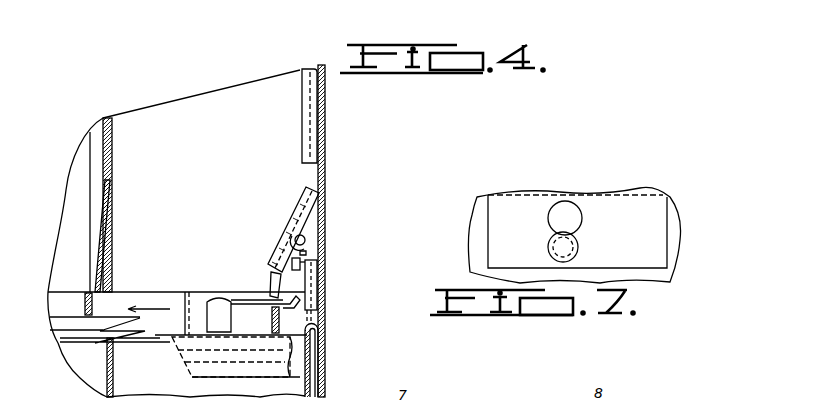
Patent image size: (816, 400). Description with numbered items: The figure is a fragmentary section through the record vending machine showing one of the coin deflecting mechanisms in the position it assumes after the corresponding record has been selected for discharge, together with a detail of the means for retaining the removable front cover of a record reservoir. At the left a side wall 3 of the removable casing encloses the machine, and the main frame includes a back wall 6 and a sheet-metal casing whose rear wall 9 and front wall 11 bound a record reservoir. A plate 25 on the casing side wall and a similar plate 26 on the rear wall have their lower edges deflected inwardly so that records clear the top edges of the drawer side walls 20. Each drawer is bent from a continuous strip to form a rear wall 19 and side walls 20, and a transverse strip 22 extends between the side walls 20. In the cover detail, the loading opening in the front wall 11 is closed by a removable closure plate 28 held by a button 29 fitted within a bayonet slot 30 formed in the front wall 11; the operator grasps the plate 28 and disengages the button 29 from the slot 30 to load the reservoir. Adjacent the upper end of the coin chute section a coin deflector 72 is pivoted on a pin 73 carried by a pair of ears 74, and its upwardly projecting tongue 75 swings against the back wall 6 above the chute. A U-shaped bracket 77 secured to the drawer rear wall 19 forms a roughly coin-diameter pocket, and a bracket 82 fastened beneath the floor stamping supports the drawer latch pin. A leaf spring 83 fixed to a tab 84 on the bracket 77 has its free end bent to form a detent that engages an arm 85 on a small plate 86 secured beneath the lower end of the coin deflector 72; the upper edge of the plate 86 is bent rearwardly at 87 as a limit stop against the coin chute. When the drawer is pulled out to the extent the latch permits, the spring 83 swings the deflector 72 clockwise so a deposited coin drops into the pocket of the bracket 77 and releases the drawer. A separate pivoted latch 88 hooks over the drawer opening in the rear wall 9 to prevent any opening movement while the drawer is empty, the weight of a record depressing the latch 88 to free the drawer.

In FIG. 4, the side wall 3 is at (175, 110).
In FIG. 4, the back wall 6 is at (326, 178).
In FIG. 4, the rear wall 9 is at (113, 266).
In FIG. 7, the front wall 11 is at (652, 216).
In FIG. 4, the rear wall 19 is at (282, 322).
In FIG. 4, the side wall 20 is at (140, 292).
In FIG. 4, the transverse strip 22 is at (127, 304).
In FIG. 4, the plate 25 is at (80, 203).
In FIG. 4, the plate 26 is at (108, 244).
In FIG. 7, the removable closure plate 28 is at (676, 250).
In FIG. 7, the button 29 is at (579, 247).
In FIG. 7, the bayonet slot 30 is at (568, 204).
In FIG. 4, the coin deflector 72 is at (292, 229).
In FIG. 4, the pin 73 is at (298, 238).
In FIG. 4, the ears 74 is at (295, 246).
In FIG. 4, the tongue 75 is at (305, 194).
In FIG. 4, the U-shaped bracket 77 is at (172, 338).
In FIG. 4, the bracket 82 is at (274, 296).
In FIG. 4, the leaf spring 83 is at (240, 301).
In FIG. 4, the tab 84 is at (203, 317).
In FIG. 4, the arm 85 is at (275, 320).
In FIG. 4, the plate 86 is at (292, 272).
In FIG. 4, the limit stop 87 is at (302, 266).
In FIG. 4, the latch 88 is at (102, 328).